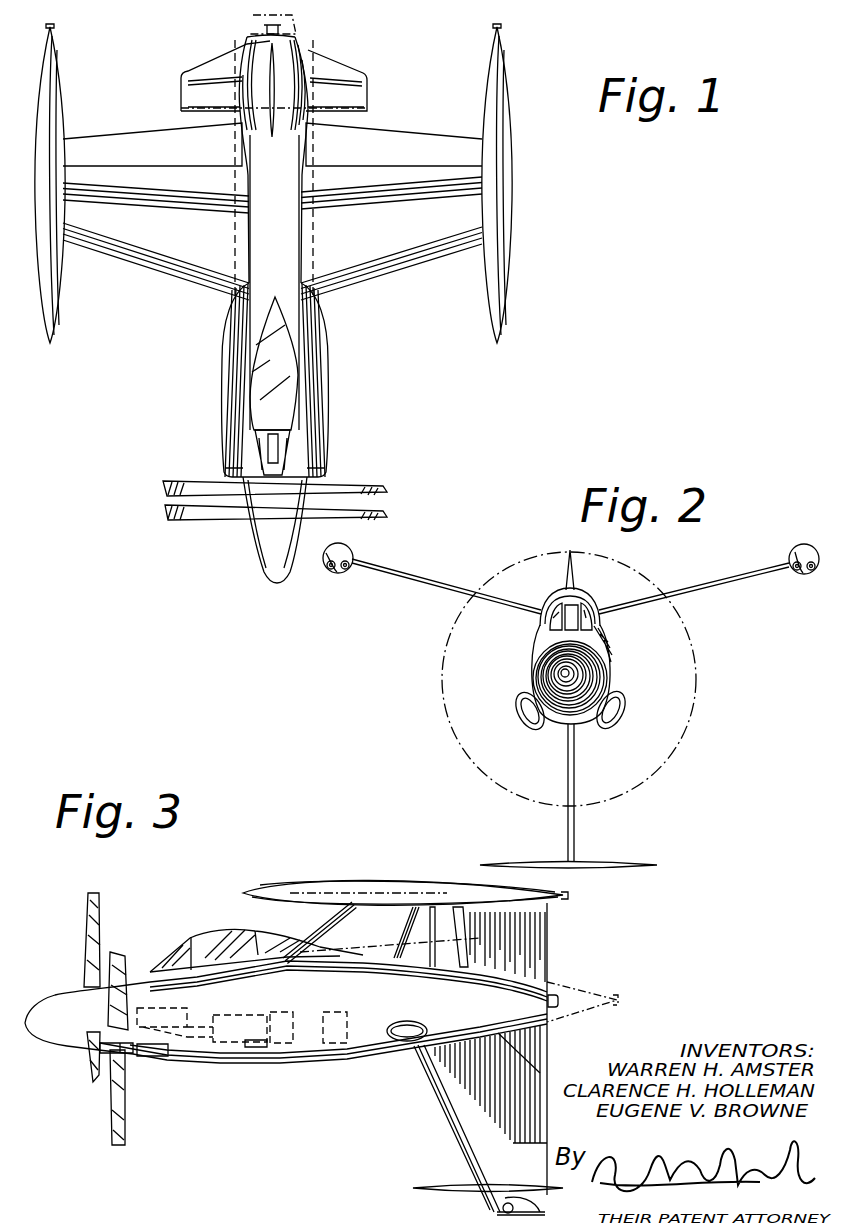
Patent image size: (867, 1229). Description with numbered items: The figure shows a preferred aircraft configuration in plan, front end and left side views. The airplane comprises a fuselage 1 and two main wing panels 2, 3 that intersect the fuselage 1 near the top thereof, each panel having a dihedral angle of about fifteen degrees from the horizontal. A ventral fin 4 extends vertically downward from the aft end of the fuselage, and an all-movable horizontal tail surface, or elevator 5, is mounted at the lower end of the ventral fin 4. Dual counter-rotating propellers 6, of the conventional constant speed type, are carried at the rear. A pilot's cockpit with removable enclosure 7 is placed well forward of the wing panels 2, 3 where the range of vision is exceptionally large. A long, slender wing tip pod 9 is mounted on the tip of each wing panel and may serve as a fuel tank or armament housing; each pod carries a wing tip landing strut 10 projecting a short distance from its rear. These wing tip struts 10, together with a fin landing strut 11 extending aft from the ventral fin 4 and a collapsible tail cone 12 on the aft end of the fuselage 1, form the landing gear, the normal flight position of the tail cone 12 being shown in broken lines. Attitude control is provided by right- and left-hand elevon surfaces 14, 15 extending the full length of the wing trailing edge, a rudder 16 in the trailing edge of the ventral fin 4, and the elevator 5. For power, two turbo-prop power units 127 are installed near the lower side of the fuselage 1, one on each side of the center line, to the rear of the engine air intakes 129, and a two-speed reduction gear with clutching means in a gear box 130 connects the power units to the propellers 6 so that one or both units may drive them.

In FIG. 1, the fuselage 1 is at (307, 318).
In FIG. 2, the fuselage 1 is at (600, 641).
In FIG. 3, the fuselage 1 is at (340, 1052).
In FIG. 1, the main wing panel 2 is at (157, 258).
In FIG. 2, the main wing panel 2 is at (438, 584).
In FIG. 1, the main wing panel 3 is at (420, 258).
In FIG. 2, the main wing panel 3 is at (718, 584).
In FIG. 3, the main wing panel 3 is at (343, 927).
In FIG. 2, the ventral fin 4 is at (565, 820).
In FIG. 3, the ventral fin 4 is at (450, 1087).
In FIG. 1, the all-movable horizontal tail surface (elevator) 5 is at (353, 95).
In FIG. 2, the all-movable horizontal tail surface (elevator) 5 is at (600, 863).
In FIG. 3, the all-movable horizontal tail surface (elevator) 5 is at (537, 1192).
In FIG. 1, the dual counter-rotating propellers 6 is at (166, 512).
In FIG. 3, the dual counter-rotating propellers 6 is at (122, 950).
In FIG. 1, the pilot's cockpit with removable enclosure 7 is at (267, 405).
In FIG. 2, the pilot's cockpit with removable enclosure 7 is at (553, 593).
In FIG. 3, the pilot's cockpit with removable enclosure 7 is at (197, 940).
In FIG. 1, the wing tip pod 9 is at (52, 312).
In FIG. 2, the wing tip pod 9 is at (353, 553).
In FIG. 3, the wing tip pod 9 is at (287, 893).
In FIG. 1, the wing tip landing strut 10 is at (52, 27).
In FIG. 3, the wing tip landing strut 10 is at (568, 896).
In FIG. 3, the fin landing strut 11 is at (528, 1183).
In FIG. 1, the collapsible tail cone 12 is at (293, 33).
In FIG. 3, the collapsible tail cone 12 is at (550, 983).
In FIG. 1, the right-hand elevon surface 14 is at (395, 140).
In FIG. 3, the right-hand elevon surface 14 is at (462, 913).
In FIG. 1, the left-hand elevon surface 15 is at (163, 142).
In FIG. 3, the rudder 16 is at (537, 1063).
In FIG. 3, the power unit 127 is at (240, 1046).
In FIG. 1, the engine air intake 129 is at (312, 483).
In FIG. 2, the engine air intake 129 is at (609, 720).
In FIG. 3, the engine air intake 129 is at (107, 1067).
In FIG. 3, the gear box 130 is at (182, 1057).